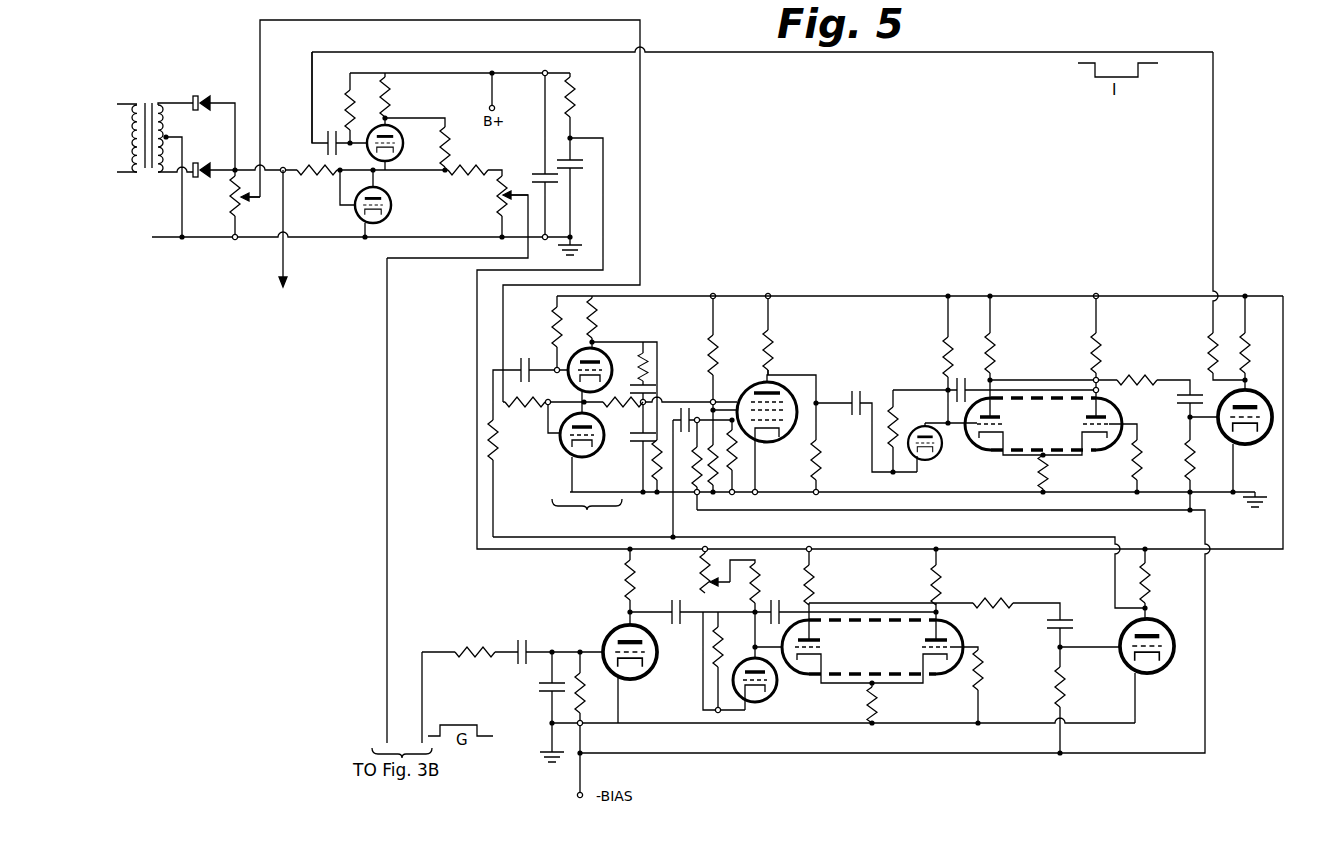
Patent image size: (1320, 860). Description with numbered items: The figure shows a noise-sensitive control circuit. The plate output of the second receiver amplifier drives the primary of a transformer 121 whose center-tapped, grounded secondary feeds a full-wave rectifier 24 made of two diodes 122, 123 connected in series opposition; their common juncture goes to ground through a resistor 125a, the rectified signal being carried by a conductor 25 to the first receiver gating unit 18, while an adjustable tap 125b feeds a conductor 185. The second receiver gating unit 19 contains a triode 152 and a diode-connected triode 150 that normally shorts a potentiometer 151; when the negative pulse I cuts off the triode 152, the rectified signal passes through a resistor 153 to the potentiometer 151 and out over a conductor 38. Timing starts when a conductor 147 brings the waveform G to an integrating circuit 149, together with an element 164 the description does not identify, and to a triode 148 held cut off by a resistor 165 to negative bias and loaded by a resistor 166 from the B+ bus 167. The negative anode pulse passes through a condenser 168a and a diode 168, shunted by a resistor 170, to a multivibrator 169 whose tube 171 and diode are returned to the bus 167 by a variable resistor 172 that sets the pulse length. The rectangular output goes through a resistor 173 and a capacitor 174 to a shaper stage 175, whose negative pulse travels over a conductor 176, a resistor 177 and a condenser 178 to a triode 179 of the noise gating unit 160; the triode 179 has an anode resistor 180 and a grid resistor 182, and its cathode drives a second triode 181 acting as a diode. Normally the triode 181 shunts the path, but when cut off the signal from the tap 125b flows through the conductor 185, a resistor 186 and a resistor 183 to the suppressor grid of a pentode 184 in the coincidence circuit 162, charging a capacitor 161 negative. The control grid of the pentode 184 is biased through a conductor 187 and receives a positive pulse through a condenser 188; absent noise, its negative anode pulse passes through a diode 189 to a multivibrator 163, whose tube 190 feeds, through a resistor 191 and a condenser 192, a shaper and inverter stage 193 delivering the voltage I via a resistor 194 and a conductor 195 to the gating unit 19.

The transformer 121 is at (153, 101).
The full-wave rectifier 24 is at (240, 91).
The diode 122 is at (209, 108).
The diode 123 is at (209, 177).
The resistor 125a is at (236, 196).
The adjustable tap 125b is at (247, 199).
The conductor 25 is at (286, 258).
The first receiver gating unit 18 is at (299, 323).
The second receiver gating unit 19 is at (424, 110).
The triode 152 is at (403, 140).
The resistor 153 is at (330, 176).
The diode-connected triode 150 is at (387, 194).
The potentiometer 151 is at (500, 197).
The conductor 185 is at (642, 140).
The conductor 38 is at (389, 441).
The bus 167 is at (503, 377).
The resistor 182 is at (535, 321).
The condenser 178 is at (524, 358).
The resistor 180 is at (598, 313).
The triode 179 is at (577, 386).
The resistor 186 is at (525, 414).
The resistor 183 is at (623, 414).
The resistor 177 is at (495, 444).
The second triode 181 is at (566, 457).
The capacitor 161 is at (640, 448).
The noise gating unit 160 is at (587, 516).
The condenser 188 is at (684, 409).
The pentode 184 is at (762, 383).
The coincidence circuit 162 is at (842, 356).
The diode 189 is at (937, 456).
The conductor 187 is at (945, 511).
The conductor 176 is at (1040, 537).
The tube 190 is at (991, 452).
The multivibrator 163 is at (1062, 364).
The resistor 191 is at (1138, 378).
The condenser 192 is at (1182, 401).
The shaper and inverter stage 193 is at (1279, 382).
The resistor 194 is at (1212, 340).
The conductor 195 is at (1211, 173).
The load resistor 166 is at (636, 575).
The junction 164 is at (554, 650).
The conductor 147 is at (424, 688).
The integrating circuit 149 is at (545, 658).
The resistor 165 is at (584, 709).
The triode 148 is at (647, 673).
The condenser 168a is at (681, 631).
The variable resistor 172 is at (724, 584).
The resistor 170 is at (720, 646).
The diode 168 is at (768, 696).
The tube 171 is at (807, 676).
The multivibrator 169 is at (892, 589).
The resistor 173 is at (989, 601).
The capacitor 174 is at (1048, 633).
The shaper stage 175 is at (1193, 607).